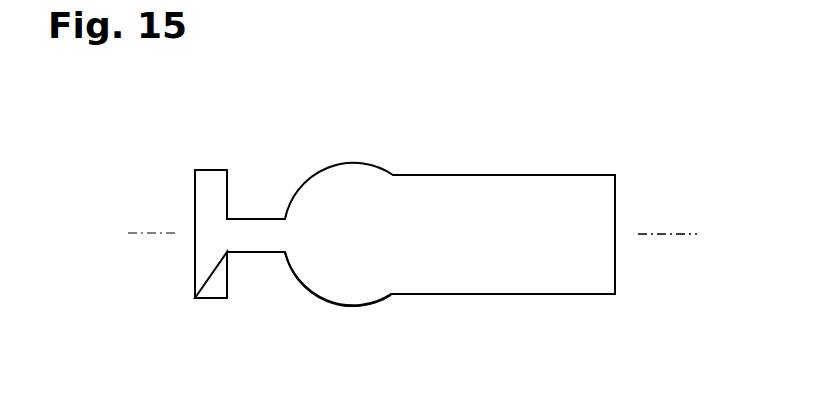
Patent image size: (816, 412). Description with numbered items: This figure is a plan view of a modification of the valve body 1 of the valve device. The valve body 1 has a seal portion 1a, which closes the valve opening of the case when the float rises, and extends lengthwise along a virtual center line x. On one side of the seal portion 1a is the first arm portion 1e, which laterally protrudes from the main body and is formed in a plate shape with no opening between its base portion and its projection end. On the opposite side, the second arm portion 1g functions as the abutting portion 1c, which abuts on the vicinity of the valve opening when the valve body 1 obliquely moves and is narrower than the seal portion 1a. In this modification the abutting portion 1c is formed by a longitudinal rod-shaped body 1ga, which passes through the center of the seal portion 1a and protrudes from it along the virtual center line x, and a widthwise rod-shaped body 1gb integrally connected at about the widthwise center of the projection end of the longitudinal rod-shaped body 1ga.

The valve body 1 is at (394, 163).
The seal portion 1a is at (331, 268).
The first arm portion 1e is at (505, 187).
The abutting portion 1c is at (195, 245).
The longitudinal rod-shaped body 1ga is at (256, 225).
The second arm portion 1g is at (212, 285).
The widthwise rod-shaped body 1gb is at (212, 285).
The virtual center line x is at (682, 233).